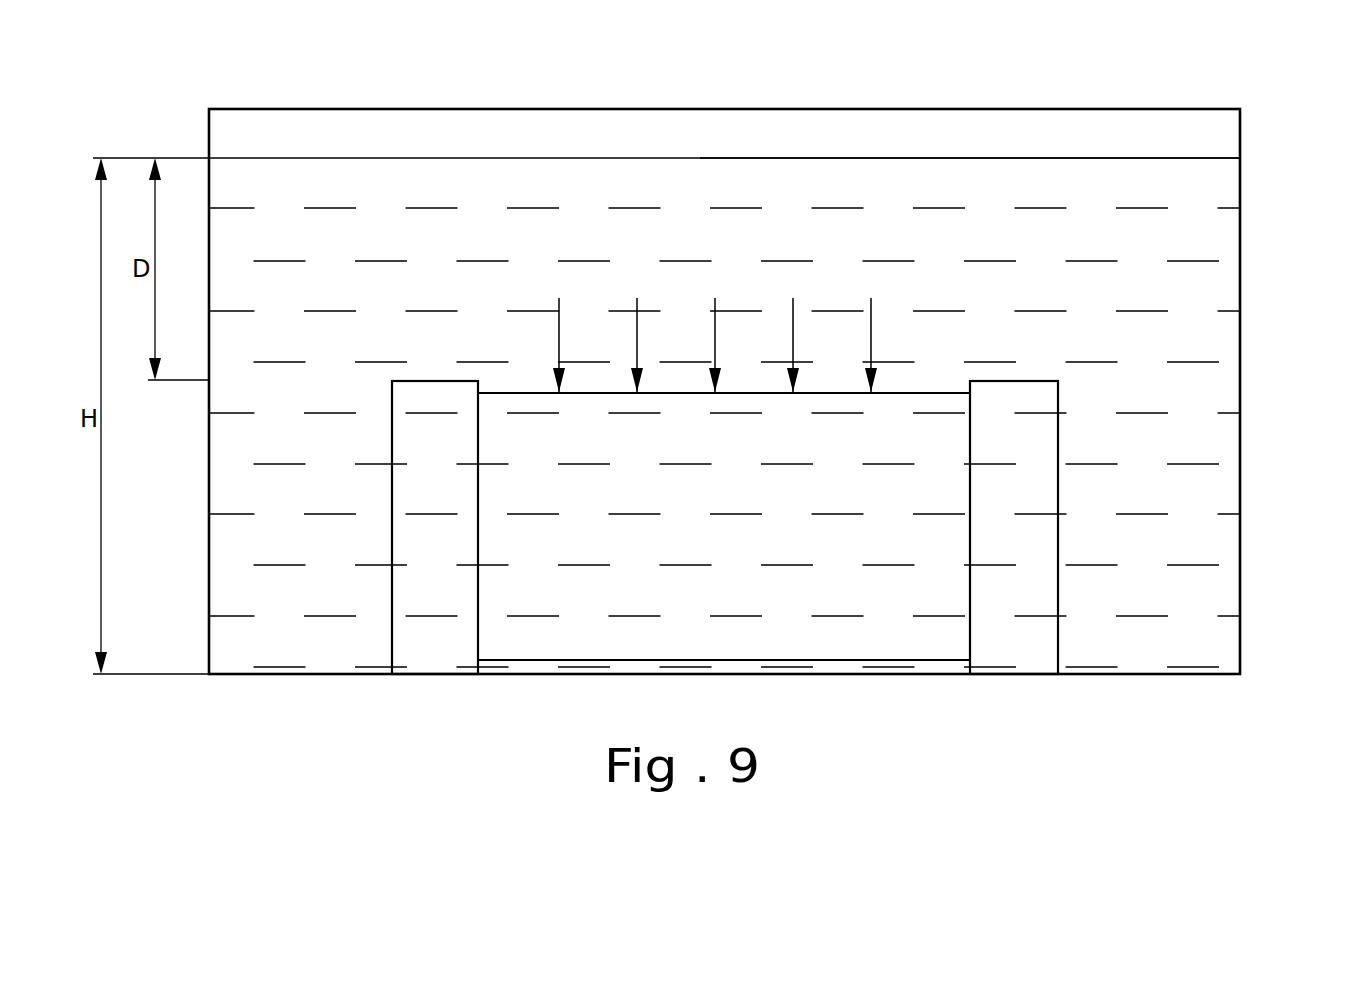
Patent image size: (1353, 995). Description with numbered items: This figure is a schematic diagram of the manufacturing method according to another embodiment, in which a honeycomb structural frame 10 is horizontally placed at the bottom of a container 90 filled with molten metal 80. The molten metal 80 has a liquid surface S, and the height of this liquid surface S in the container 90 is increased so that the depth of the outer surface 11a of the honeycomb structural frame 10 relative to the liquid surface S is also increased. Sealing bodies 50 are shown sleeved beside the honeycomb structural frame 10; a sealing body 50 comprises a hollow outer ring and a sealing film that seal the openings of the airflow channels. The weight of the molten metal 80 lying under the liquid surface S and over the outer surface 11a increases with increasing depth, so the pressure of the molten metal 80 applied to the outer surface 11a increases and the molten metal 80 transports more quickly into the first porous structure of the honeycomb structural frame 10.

The honeycomb structural frame 10 is at (938, 540).
The outer surface 11a is at (928, 390).
The sealing body 50 is at (416, 597).
The molten metal 80 is at (1193, 260).
The container 90 is at (1242, 130).
The liquid surface S is at (1158, 158).